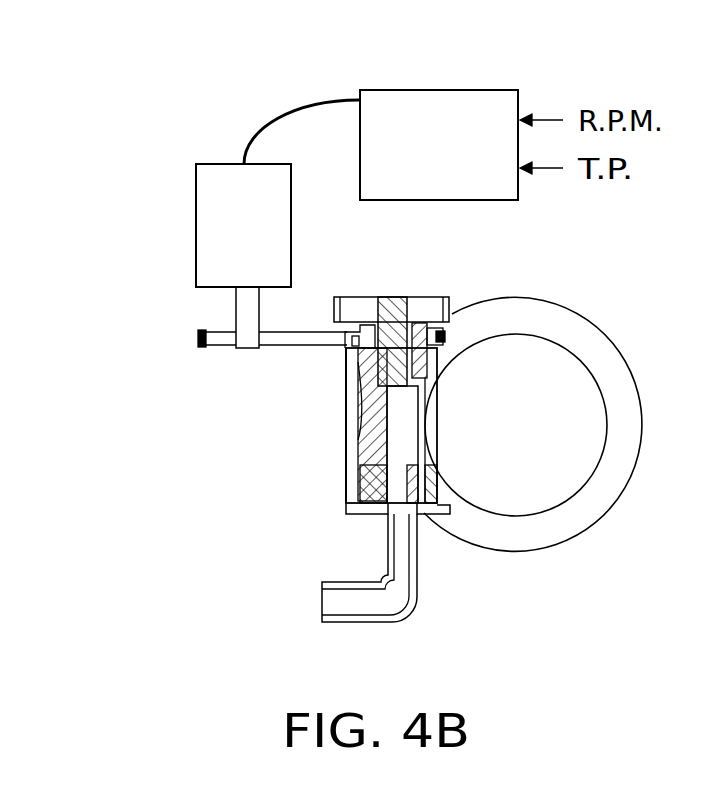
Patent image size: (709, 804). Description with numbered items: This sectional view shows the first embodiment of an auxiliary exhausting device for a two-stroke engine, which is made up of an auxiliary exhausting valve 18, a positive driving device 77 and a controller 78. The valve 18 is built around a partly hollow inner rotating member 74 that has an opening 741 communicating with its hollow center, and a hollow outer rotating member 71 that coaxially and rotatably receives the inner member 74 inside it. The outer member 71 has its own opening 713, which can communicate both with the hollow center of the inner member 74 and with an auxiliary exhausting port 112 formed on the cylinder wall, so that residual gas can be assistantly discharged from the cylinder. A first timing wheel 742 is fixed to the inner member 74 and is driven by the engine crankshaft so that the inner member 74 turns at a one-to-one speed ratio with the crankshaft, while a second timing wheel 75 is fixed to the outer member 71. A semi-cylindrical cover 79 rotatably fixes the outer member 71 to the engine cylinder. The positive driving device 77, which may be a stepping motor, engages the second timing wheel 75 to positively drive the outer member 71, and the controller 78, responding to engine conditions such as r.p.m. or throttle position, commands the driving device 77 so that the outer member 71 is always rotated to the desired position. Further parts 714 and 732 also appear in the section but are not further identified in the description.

The controller 78 is at (440, 103).
The positive driving device 77 is at (217, 215).
The first timing wheel 742 is at (363, 308).
The auxiliary exhausting valve 18 is at (428, 293).
The second timing wheel 75 is at (348, 335).
The semi-cylindrical cover 79 is at (343, 390).
The auxiliary exhausting port 112 is at (345, 425).
The inner rotating member 74 is at (343, 445).
The outer rotating member 71 is at (343, 470).
The bottom flange 714 is at (345, 497).
The pipe 732 is at (377, 560).
The opening 741 is at (424, 516).
The opening 713 is at (407, 460).